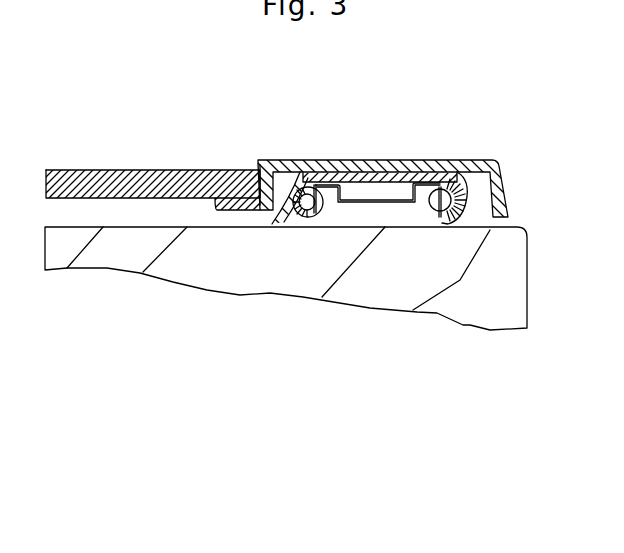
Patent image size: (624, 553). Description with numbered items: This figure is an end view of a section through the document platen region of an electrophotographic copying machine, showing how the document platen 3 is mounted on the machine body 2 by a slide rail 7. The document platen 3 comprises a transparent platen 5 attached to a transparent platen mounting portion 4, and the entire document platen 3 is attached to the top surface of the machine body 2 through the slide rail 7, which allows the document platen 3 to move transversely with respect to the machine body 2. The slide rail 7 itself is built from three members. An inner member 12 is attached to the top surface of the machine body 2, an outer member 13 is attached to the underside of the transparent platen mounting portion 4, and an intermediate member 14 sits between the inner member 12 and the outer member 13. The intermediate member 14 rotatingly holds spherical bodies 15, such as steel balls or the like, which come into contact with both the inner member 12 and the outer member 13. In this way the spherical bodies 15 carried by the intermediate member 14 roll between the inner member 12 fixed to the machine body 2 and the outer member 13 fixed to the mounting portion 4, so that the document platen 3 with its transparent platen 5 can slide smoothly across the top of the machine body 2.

The machine body 2 is at (517, 308).
The document platen 3 is at (250, 163).
The transparent platen mounting portion 4 is at (392, 163).
The transparent platen 5 is at (152, 178).
The slide rail 7 is at (477, 205).
The inner member 12 is at (320, 212).
The outer member 13 is at (270, 226).
The intermediate member 14 is at (396, 206).
The spherical bodies 15 is at (290, 213).